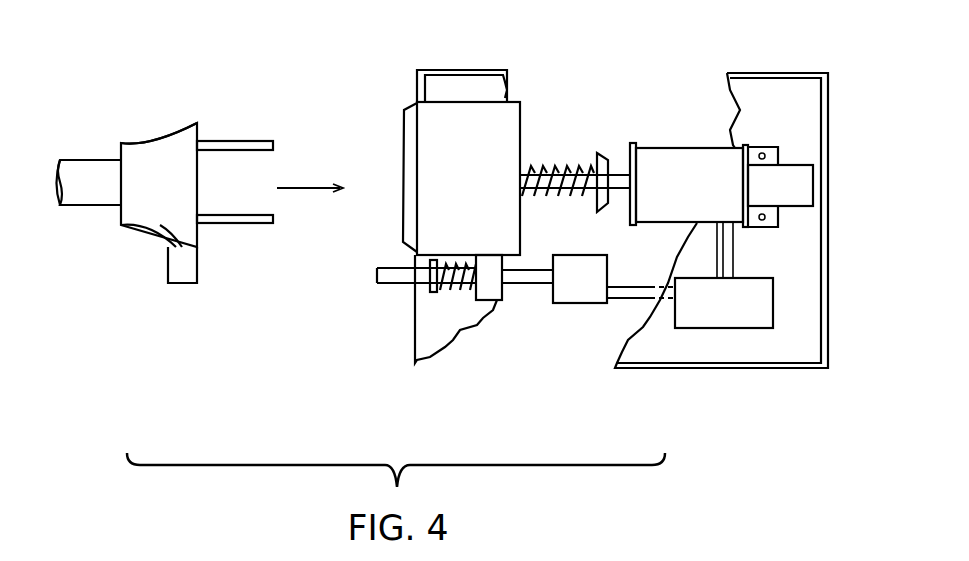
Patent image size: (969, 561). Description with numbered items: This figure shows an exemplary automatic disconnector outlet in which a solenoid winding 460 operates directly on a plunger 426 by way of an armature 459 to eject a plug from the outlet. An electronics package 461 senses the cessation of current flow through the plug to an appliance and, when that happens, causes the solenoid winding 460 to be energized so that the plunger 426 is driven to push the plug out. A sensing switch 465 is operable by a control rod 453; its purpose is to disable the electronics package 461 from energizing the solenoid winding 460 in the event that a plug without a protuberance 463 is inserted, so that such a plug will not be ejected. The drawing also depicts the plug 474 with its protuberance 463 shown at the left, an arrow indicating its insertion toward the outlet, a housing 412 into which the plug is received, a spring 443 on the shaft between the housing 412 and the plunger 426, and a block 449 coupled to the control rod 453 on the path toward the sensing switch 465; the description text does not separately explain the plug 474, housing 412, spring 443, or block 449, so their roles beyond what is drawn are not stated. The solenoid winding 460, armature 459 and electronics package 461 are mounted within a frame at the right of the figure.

The plug 474 is at (160, 145).
The protuberance 463 is at (178, 273).
The housing 412 is at (433, 220).
The spring 443 is at (547, 168).
The plunger 426 is at (618, 167).
The solenoid winding 460 is at (697, 160).
The armature 459 is at (803, 193).
The electronics package 461 is at (722, 313).
The sensing switch 465 is at (585, 292).
The block 449 is at (490, 290).
The control rod 453 is at (398, 277).